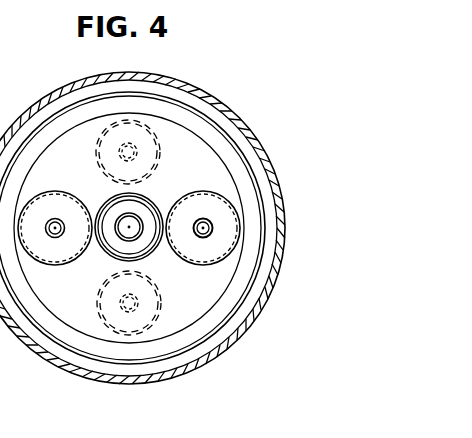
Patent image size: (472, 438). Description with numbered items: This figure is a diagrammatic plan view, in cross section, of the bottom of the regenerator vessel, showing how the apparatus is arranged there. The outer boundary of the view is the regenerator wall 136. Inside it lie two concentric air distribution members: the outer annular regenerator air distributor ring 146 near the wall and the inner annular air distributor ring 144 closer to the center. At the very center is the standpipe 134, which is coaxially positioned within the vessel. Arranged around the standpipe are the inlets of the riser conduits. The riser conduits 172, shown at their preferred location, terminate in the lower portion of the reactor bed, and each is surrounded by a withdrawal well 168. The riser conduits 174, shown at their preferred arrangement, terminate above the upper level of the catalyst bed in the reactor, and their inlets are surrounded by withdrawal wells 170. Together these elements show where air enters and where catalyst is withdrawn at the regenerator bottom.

The standpipe 134 is at (136, 216).
The regenerator wall 136 is at (208, 100).
The inner annular air distributor ring 144 is at (108, 204).
The outer annular regenerator air distributor ring 146 is at (160, 350).
The withdrawal well 168 is at (160, 152).
The withdrawal wells 170 is at (47, 192).
The riser conduits 172 is at (120, 152).
The riser conduits 174 is at (58, 233).